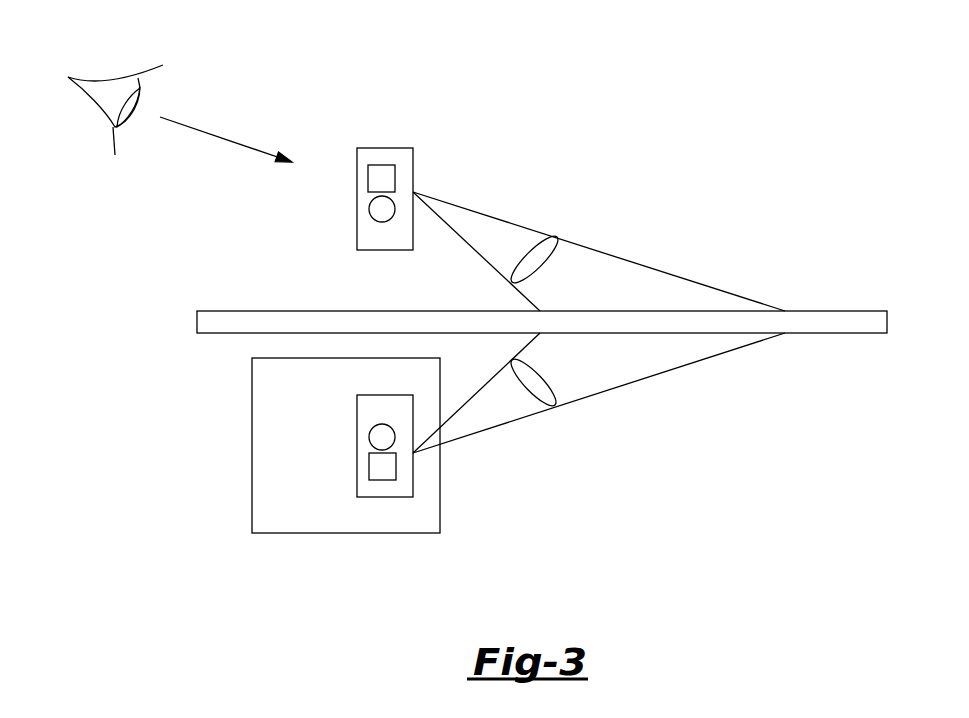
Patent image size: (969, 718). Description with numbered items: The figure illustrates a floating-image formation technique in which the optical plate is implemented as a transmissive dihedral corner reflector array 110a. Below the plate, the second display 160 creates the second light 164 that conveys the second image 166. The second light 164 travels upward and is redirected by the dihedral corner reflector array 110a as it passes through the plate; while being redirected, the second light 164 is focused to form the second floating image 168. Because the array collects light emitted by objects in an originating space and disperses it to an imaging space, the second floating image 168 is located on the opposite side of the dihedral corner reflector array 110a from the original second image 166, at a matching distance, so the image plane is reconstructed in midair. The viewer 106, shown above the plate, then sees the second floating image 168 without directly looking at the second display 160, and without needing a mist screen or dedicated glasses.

The viewer 106 is at (113, 80).
The second floating image 168 is at (385, 148).
The transmissive dihedral corner reflector array 110a is at (838, 311).
The second light 164 is at (617, 388).
The second display 160 is at (252, 447).
The second image 166 is at (357, 447).